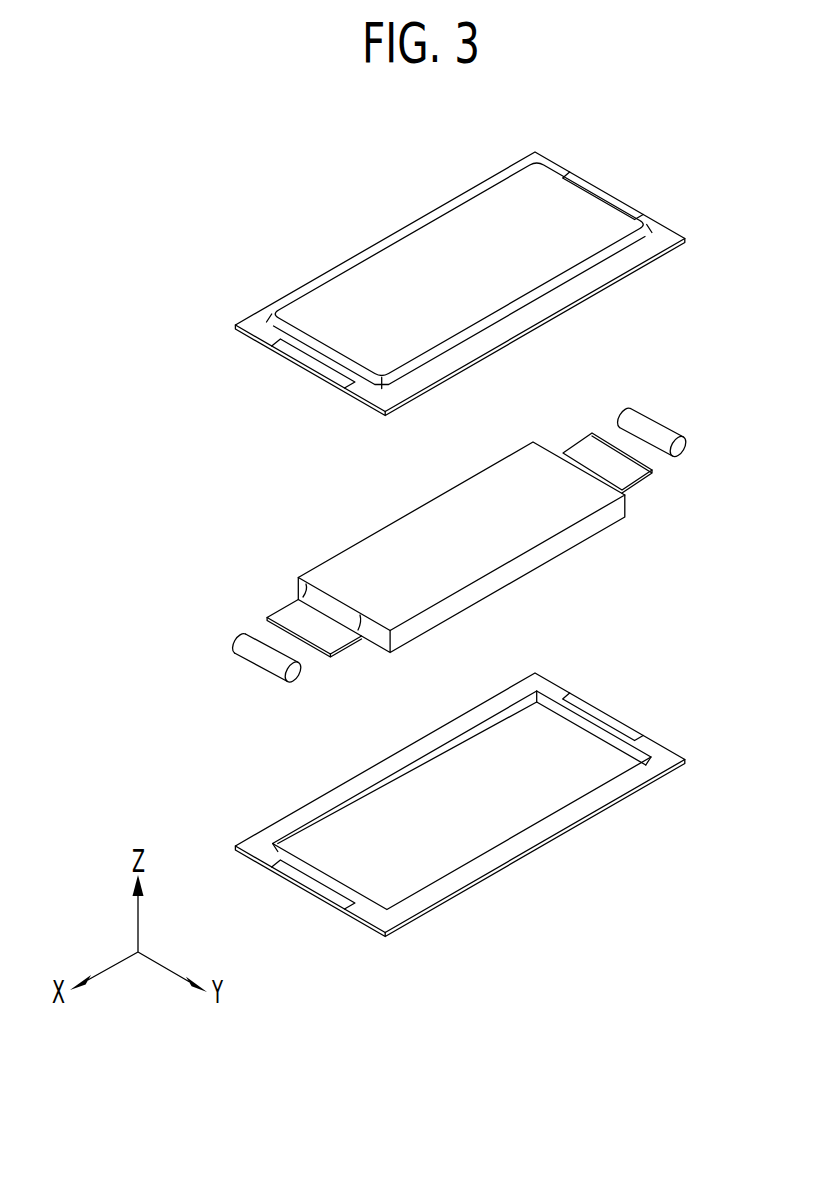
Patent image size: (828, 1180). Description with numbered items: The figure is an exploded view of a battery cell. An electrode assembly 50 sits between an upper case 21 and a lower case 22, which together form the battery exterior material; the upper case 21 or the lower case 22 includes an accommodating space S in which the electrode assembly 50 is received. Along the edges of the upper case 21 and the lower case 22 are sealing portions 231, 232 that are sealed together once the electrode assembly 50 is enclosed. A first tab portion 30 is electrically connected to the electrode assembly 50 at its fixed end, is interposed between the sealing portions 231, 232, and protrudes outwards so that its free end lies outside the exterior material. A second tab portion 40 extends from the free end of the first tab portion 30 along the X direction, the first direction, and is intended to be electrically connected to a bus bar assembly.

The upper case 21 is at (460, 284).
The sealing portion 231 is at (595, 280).
The first tab portion 30 is at (418, 546).
The electrode assembly 50 is at (385, 542).
The second tab portion 40 is at (232, 635).
The lower case 22 is at (460, 790).
The sealing portion 232 is at (595, 800).
The accommodating space S is at (557, 758).